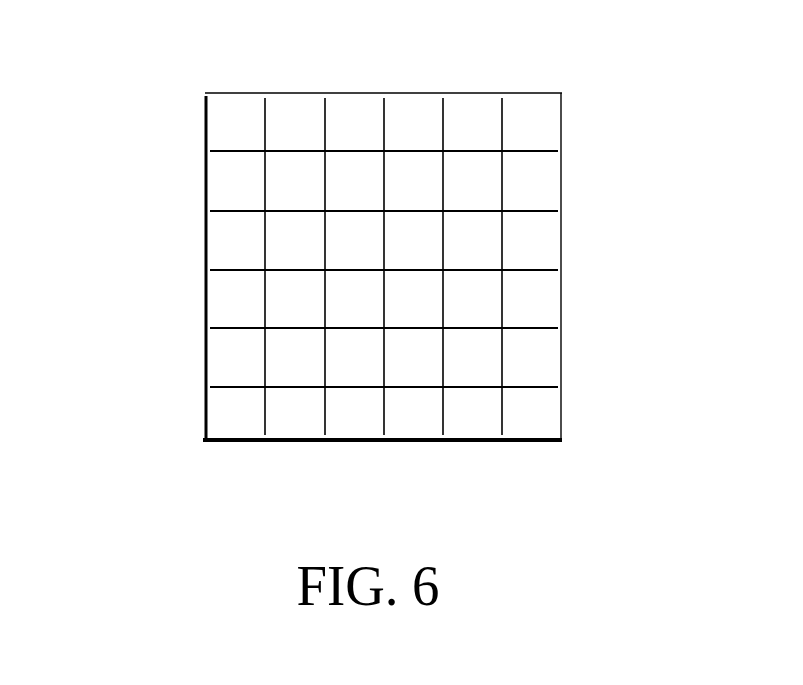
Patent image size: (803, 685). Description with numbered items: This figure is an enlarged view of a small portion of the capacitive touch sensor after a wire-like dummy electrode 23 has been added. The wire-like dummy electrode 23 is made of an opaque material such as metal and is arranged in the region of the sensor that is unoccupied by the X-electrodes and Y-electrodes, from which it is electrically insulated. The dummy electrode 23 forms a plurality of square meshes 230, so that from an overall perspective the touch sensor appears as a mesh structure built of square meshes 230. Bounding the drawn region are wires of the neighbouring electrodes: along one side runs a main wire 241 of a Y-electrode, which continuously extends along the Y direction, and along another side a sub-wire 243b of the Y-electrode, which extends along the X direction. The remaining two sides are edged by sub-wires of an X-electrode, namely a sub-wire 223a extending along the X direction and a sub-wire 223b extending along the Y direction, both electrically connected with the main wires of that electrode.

The wire-like dummy electrode 23 is at (236, 210).
The square mesh 230 is at (295, 177).
The sub-wire 223a is at (562, 183).
The sub-wire 223b is at (405, 92).
The main wire 241 is at (400, 443).
The sub-wire 243b is at (205, 279).